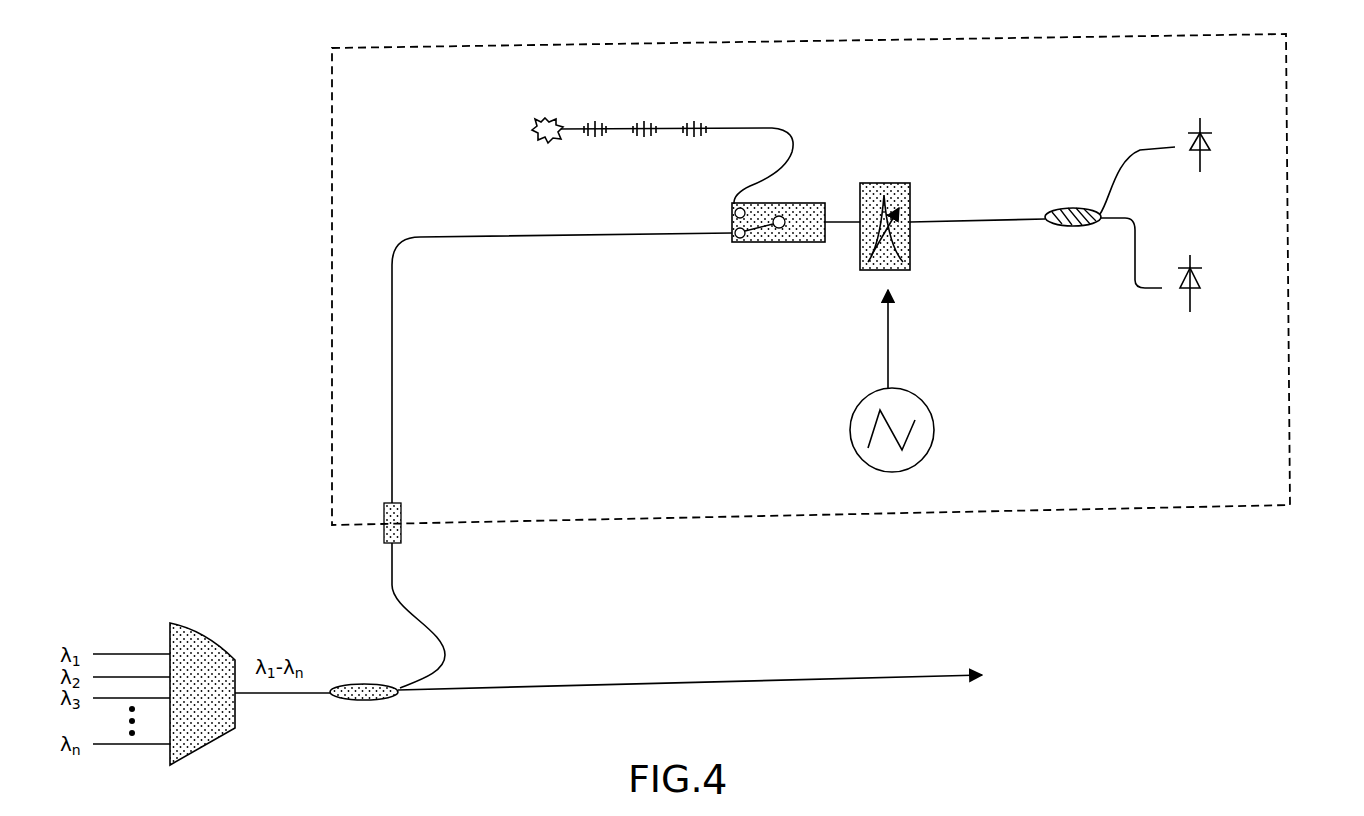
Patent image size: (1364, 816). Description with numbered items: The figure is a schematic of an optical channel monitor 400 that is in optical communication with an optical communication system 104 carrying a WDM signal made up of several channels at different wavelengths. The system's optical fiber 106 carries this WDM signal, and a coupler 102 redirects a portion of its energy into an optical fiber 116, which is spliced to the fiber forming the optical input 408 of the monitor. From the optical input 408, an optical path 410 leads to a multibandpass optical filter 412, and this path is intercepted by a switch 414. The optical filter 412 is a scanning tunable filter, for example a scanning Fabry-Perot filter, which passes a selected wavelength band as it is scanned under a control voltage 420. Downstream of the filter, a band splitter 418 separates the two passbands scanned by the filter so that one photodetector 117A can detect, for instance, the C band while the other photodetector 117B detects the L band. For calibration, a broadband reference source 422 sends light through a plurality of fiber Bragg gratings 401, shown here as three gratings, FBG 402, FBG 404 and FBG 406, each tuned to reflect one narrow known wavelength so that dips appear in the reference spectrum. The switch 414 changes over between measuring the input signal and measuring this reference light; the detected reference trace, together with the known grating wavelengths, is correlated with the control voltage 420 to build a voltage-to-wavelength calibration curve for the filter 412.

The optical channel monitor 400 is at (325, 248).
The plurality of fiber Bragg gratings 401 is at (742, 88).
The FBG 402 is at (597, 150).
The FBG 404 is at (648, 150).
The FBG 406 is at (698, 150).
The optical input 408 is at (401, 512).
The optical path 410 is at (392, 333).
The multibandpass optical filter 412 is at (912, 202).
The switch 414 is at (801, 203).
The band splitter 418 is at (1060, 226).
The control voltage 420 is at (934, 430).
The reference source 422 is at (548, 117).
The coupler 102 is at (366, 680).
The optical communication system 104 is at (697, 657).
The optical fiber 106 is at (632, 680).
The optical fiber 116 is at (445, 655).
The photodetector 117A is at (1225, 141).
The photodetector 117B is at (1208, 280).